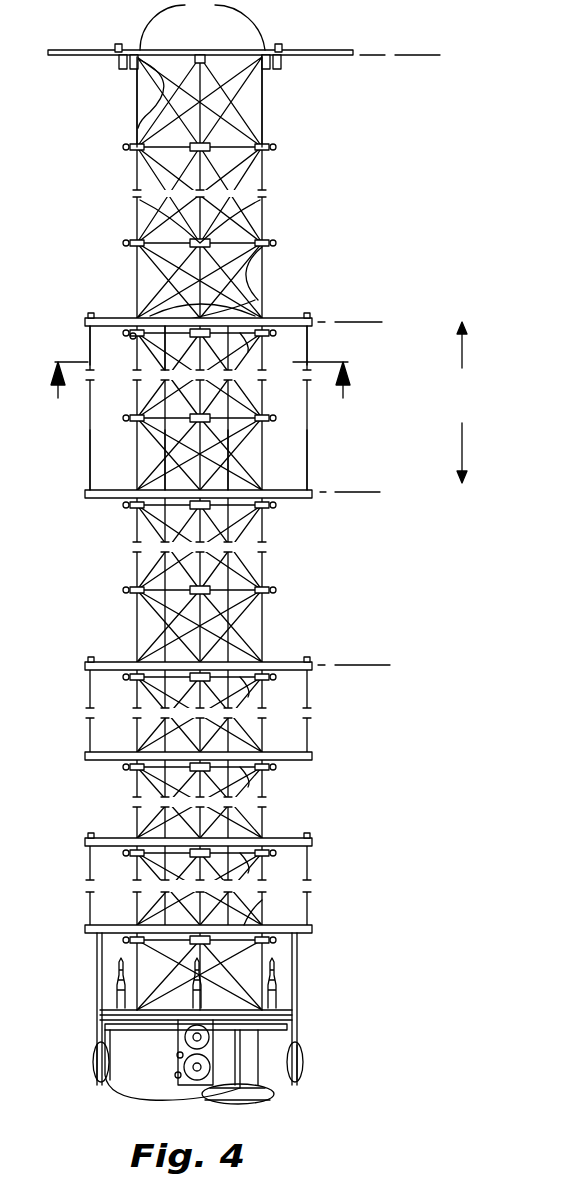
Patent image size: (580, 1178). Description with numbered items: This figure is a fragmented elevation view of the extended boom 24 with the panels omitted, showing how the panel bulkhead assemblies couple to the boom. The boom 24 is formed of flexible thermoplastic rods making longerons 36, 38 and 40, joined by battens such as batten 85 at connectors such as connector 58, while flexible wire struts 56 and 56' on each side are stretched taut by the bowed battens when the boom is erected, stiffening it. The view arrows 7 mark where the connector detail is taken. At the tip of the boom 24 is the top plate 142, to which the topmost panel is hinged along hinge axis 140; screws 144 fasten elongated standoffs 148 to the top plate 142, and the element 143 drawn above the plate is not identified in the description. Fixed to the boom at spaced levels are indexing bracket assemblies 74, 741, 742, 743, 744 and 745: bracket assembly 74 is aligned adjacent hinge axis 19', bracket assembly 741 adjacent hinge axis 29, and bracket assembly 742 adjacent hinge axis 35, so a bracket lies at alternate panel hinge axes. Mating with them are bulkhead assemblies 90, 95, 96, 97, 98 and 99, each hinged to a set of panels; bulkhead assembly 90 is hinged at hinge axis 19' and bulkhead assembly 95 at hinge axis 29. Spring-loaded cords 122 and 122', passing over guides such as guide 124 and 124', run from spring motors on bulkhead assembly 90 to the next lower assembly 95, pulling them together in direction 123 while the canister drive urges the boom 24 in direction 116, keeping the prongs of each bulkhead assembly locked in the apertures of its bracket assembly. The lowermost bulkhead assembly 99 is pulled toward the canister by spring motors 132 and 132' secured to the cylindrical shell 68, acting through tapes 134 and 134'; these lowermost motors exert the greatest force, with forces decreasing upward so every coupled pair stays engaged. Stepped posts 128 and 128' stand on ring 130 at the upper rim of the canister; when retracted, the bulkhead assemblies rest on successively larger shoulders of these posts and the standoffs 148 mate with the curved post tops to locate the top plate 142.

The boom 24 is at (277, 182).
The top plate 142 is at (90, 49).
The screws 144 is at (118, 44).
The top arch 143 is at (202, 25).
The hinge axis 140 is at (414, 52).
The longeron 38 is at (172, 56).
The standoffs 148 is at (118, 63).
The longeron 40 is at (136, 93).
The longeron 36 is at (263, 100).
The struts 56 is at (197, 190).
The struts 56' is at (202, 221).
The bulkhead assembly 90 is at (118, 317).
The platform cable loop 124' is at (222, 306).
The guide 124 is at (328, 321).
The hinge axis 19' is at (350, 299).
The connector 58 is at (130, 336).
The indexing bracket assembly 74 is at (248, 344).
The batten 85 is at (150, 352).
The section line 7 is at (200, 395).
The direction 116 is at (462, 348).
The direction 123 is at (462, 453).
The bulkhead assembly 95 is at (86, 499).
The cord 122' is at (130, 460).
The cord 122 is at (327, 460).
The indexing bracket assembly 741 is at (264, 460).
The hinge axis 29 is at (375, 491).
The hinge axis 35 is at (371, 664).
The bulkhead assembly 96 is at (118, 671).
The indexing bracket assembly 742 is at (246, 700).
The bulkhead assembly 97 is at (96, 761).
The indexing bracket assembly 743 is at (246, 790).
The bulkhead assembly 98 is at (114, 847).
The indexing bracket assembly 744 is at (246, 875).
The bulkhead assembly 99 is at (110, 924).
The indexing bracket assembly 745 is at (248, 914).
The tape 134 is at (313, 1009).
The stepped post 128' is at (302, 983).
The stepped post 128 is at (165, 1010).
The ring 130 is at (292, 1016).
The shell 68 is at (126, 1096).
The tape 134' is at (171, 1058).
The spring motor 132 is at (313, 1062).
The spring motor 132' is at (238, 1079).